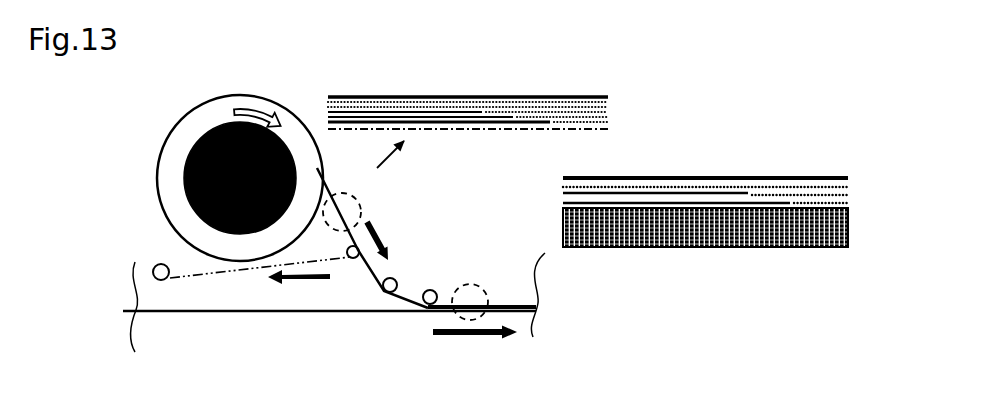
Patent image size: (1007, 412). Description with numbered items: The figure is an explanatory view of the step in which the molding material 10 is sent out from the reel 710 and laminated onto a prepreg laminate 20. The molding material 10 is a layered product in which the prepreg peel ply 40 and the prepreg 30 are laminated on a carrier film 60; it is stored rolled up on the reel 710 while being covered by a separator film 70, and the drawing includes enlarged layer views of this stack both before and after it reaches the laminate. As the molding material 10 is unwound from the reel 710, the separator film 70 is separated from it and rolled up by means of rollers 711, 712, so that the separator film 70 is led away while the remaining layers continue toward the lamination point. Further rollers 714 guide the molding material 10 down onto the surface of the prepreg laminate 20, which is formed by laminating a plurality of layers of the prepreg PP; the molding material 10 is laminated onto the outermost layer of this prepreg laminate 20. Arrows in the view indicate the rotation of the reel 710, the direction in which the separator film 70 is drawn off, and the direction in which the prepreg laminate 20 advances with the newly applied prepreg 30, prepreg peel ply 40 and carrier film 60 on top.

The molding material 10 is at (403, 142).
The prepreg laminate 20 is at (277, 312).
The prepreg 30 is at (448, 110).
The prepreg peel ply 40 is at (608, 112).
The carrier film 60 is at (513, 96).
The separator film 70 is at (258, 278).
The reel 710 is at (204, 136).
The roller 711 is at (351, 258).
The roller 712 is at (161, 280).
The guide rollers 714 is at (430, 290).
The prepreg PP is at (208, 312).